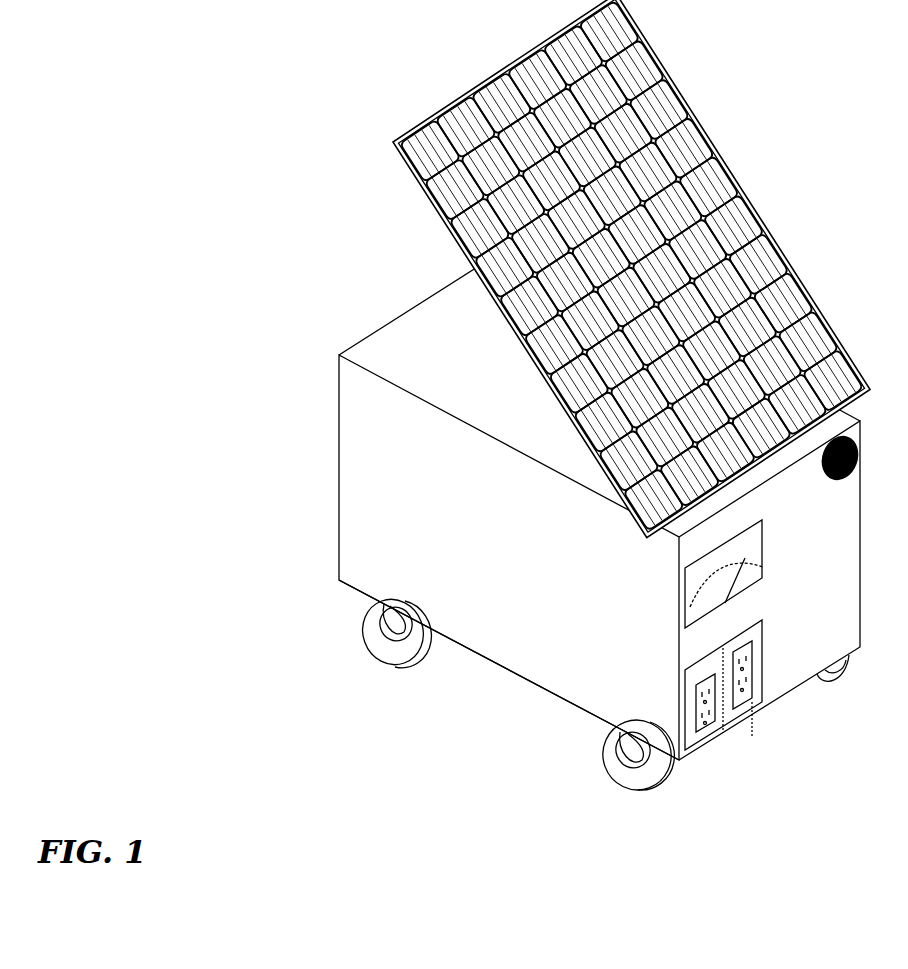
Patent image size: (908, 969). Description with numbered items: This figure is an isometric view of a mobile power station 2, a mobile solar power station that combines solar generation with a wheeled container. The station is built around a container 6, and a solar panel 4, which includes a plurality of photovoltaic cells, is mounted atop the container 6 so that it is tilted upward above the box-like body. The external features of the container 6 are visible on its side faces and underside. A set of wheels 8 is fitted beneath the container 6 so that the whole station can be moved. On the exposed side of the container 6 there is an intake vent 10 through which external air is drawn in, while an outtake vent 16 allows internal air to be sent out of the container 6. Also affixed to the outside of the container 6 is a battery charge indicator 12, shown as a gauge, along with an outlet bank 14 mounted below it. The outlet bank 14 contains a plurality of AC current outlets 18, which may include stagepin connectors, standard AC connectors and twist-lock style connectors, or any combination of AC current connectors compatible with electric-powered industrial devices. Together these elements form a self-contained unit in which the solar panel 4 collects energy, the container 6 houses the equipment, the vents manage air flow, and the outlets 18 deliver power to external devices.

The mobile power station 2 is at (323, 196).
The solar panel 4 is at (758, 208).
The container 6 is at (468, 538).
The set of wheels 8 is at (391, 660).
The intake vent 10 is at (838, 481).
The battery charge indicator 12 is at (763, 567).
The outlet bank 14 is at (762, 658).
The outtake vent 16 is at (570, 713).
The AC current outlets 18 is at (740, 651).